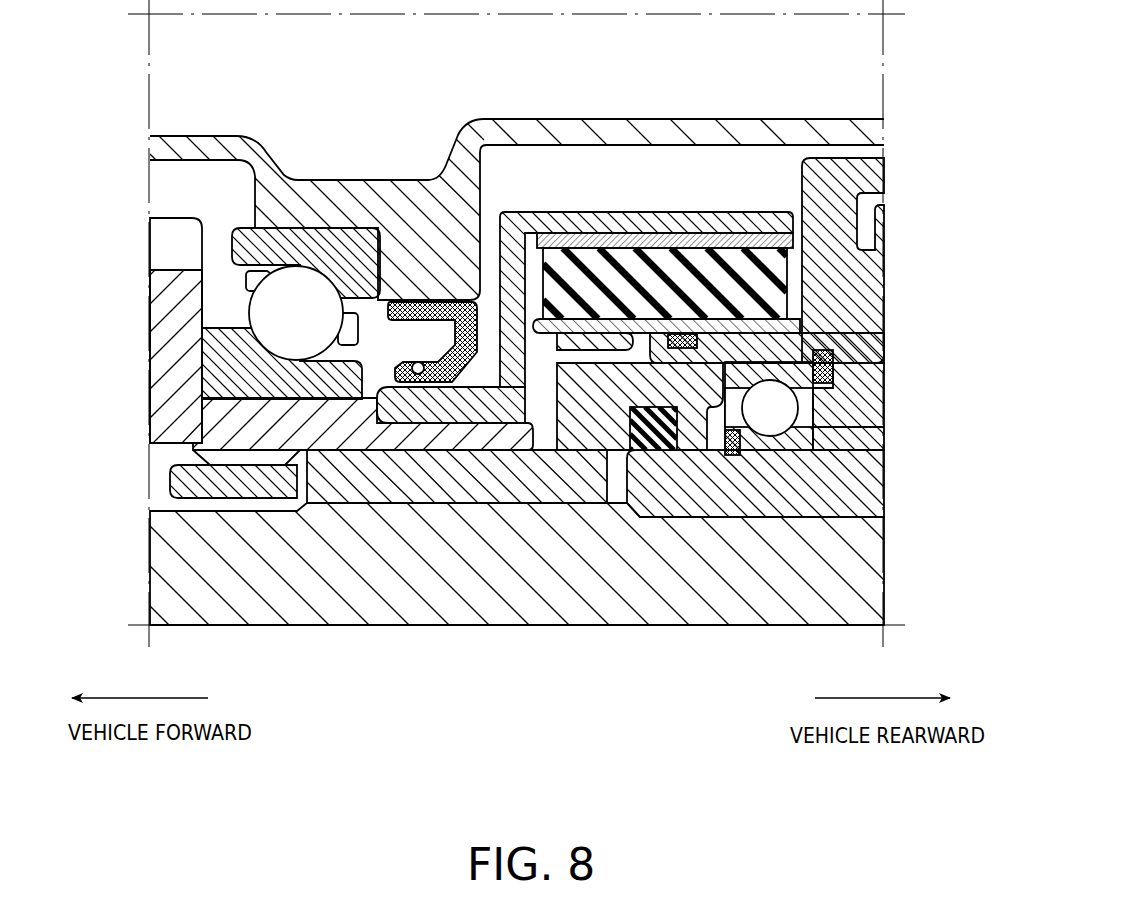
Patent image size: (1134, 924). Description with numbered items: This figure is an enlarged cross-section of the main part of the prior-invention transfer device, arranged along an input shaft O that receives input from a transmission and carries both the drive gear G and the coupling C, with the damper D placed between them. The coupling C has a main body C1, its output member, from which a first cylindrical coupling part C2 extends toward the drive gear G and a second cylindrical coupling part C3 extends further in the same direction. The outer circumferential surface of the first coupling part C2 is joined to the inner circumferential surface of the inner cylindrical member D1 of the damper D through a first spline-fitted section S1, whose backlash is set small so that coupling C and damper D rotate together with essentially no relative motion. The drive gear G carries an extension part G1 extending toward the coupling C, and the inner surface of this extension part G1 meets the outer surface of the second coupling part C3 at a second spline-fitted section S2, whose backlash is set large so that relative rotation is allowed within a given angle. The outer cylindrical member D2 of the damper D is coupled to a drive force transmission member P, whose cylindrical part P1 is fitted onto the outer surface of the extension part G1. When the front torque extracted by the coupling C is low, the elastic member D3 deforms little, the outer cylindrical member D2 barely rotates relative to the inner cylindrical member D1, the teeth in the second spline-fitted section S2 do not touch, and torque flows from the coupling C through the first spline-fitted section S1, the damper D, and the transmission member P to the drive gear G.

The drive gear G is at (150, 300).
The extension part G1 is at (240, 423).
The input shaft O is at (150, 590).
The drive force transmission member P is at (585, 425).
The cylindrical part P1 is at (483, 405).
The damper D is at (750, 260).
The inner cylindrical member D1 is at (800, 323).
The outer cylindrical member D2 is at (724, 238).
The elastic member D3 is at (793, 262).
The coupling C is at (642, 327).
The main body C1 is at (853, 157).
The first cylindrical coupling part C2 is at (805, 352).
The second cylindrical coupling part C3 is at (405, 493).
The first spline-fitted section S1 is at (585, 362).
The second spline-fitted section S2 is at (222, 467).